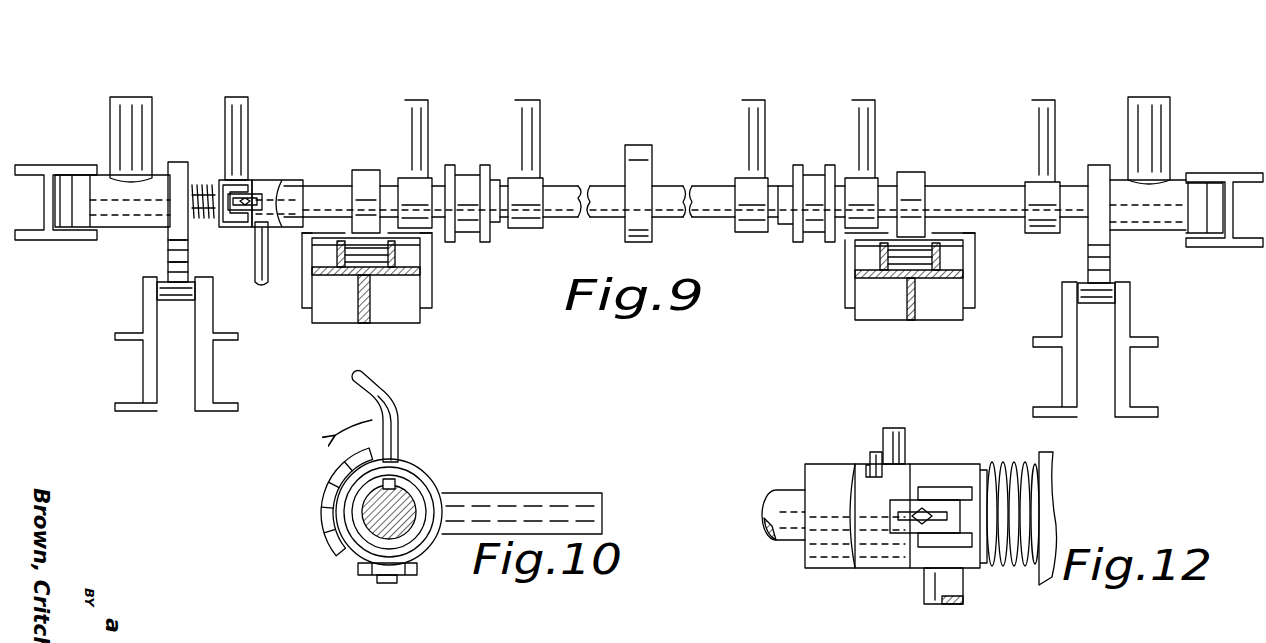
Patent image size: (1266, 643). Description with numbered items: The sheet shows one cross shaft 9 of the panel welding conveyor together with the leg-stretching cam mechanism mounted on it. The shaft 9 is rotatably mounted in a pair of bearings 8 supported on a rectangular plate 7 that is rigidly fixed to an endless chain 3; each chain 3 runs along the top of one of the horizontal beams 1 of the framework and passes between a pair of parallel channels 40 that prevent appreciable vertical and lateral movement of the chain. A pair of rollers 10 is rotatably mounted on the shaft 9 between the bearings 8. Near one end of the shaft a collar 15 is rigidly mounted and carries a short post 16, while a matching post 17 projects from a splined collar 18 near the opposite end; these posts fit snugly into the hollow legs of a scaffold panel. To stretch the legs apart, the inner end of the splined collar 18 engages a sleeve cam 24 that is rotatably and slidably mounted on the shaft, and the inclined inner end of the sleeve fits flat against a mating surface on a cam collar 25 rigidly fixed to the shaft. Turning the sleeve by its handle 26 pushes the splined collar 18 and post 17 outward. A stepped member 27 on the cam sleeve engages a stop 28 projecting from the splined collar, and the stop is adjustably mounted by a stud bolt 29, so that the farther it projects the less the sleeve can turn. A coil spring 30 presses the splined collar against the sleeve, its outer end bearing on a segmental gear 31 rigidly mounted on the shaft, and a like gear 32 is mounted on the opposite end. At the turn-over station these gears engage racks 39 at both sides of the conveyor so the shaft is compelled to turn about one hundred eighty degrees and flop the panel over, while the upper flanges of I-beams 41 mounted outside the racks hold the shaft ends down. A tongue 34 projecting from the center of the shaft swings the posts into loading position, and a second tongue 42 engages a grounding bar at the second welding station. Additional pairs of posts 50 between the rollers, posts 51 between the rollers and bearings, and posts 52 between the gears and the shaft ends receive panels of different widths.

In FIG. 9, the horizontal beams 1 is at (360, 300).
In FIG. 9, the endless chains 3 is at (345, 270).
In FIG. 9, the rectangular plates 7 is at (410, 247).
In FIG. 9, the bearings 8 is at (366, 175).
In FIG. 9, the cross shaft 9 is at (707, 190).
In FIG. 10, the cross shaft 9 is at (405, 525).
In FIG. 12, the cross shaft 9 is at (790, 538).
In FIG. 9, the rollers 10 is at (468, 175).
In FIG. 9, the collar 15 is at (1042, 226).
In FIG. 9, the short post 16 is at (1040, 102).
In FIG. 9, the matching post 17 is at (238, 100).
In FIG. 10, the matching post 17 is at (580, 496).
In FIG. 12, the matching post 17 is at (963, 585).
In FIG. 9, the splined collar 18 is at (245, 180).
In FIG. 10, the splined collar 18 is at (405, 480).
In FIG. 12, the splined collar 18 is at (935, 468).
In FIG. 9, the sleeve cam 24 is at (272, 182).
In FIG. 12, the sleeve cam 24 is at (860, 560).
In FIG. 9, the cam collar 25 is at (303, 190).
In FIG. 12, the cam collar 25 is at (820, 470).
In FIG. 9, the handle 26 is at (258, 280).
In FIG. 10, the handle 26 is at (390, 400).
In FIG. 12, the handle 26 is at (903, 430).
In FIG. 10, the stepped member 27 is at (330, 491).
In FIG. 12, the stepped member 27 is at (870, 455).
In FIG. 9, the stop 28 is at (255, 215).
In FIG. 10, the stop 28 is at (370, 572).
In FIG. 12, the stop 28 is at (895, 550).
In FIG. 10, the stud bolt 29 is at (393, 585).
In FIG. 12, the stud bolt 29 is at (922, 522).
In FIG. 9, the coil spring 30 is at (183, 165).
In FIG. 10, the coil spring 30 is at (430, 492).
In FIG. 12, the coil spring 30 is at (1000, 462).
In FIG. 9, the segmental gear 31 is at (173, 253).
In FIG. 12, the segmental gear 31 is at (1050, 486).
In FIG. 9, the segmental gear 32 is at (1100, 260).
In FIG. 9, the tongue 34 is at (627, 150).
In FIG. 9, the racks 39 is at (148, 292).
In FIG. 9, the parallel channels 40 is at (308, 290).
In FIG. 9, the I-beams 41 is at (50, 165).
In FIG. 9, the second tongue 42 is at (628, 238).
In FIG. 9, the posts 50 is at (528, 102).
In FIG. 9, the posts 51 is at (420, 102).
In FIG. 9, the posts 52 is at (128, 100).